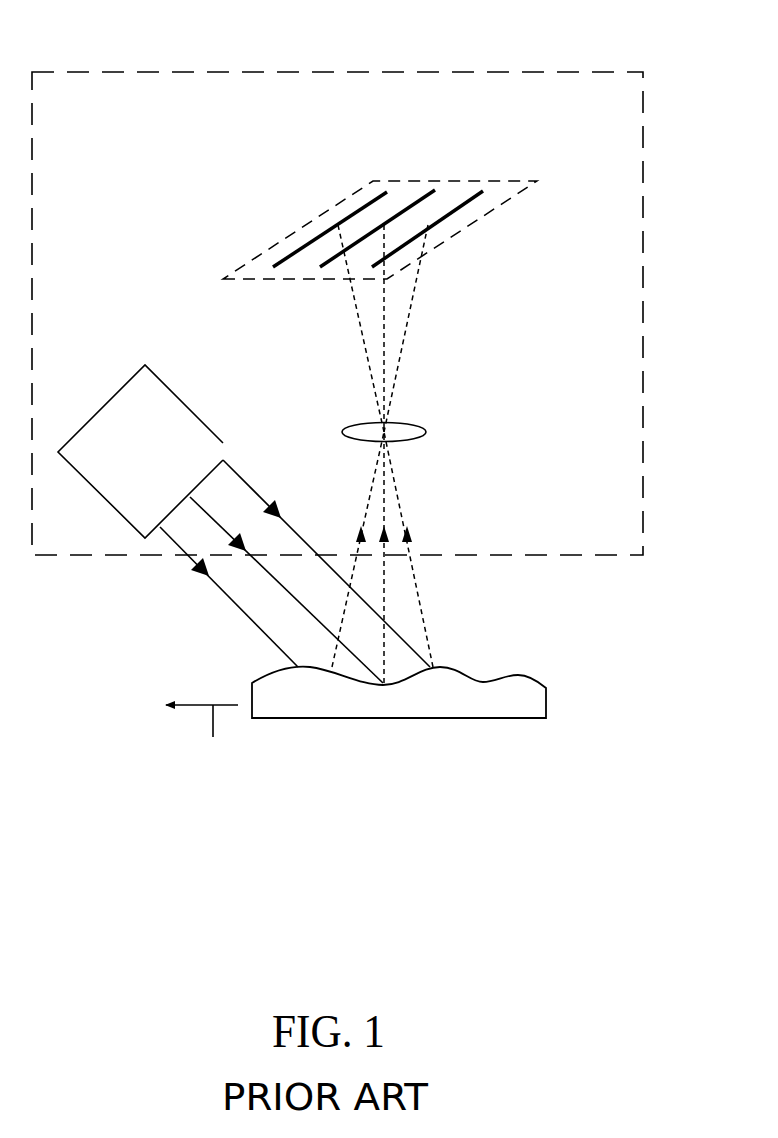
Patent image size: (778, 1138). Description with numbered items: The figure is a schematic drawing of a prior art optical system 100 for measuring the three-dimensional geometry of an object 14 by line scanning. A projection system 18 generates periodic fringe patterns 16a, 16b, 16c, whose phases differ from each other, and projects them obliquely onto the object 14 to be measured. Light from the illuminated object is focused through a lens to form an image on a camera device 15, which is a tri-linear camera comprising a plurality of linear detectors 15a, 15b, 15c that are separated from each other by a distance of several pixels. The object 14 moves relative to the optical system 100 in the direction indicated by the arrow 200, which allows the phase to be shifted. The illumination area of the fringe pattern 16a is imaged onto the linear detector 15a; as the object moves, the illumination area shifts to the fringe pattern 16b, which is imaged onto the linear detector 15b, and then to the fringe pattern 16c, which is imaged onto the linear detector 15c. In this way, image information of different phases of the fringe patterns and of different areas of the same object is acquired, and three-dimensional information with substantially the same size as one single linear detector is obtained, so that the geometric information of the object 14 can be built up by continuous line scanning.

The optical system 100 is at (368, 68).
The camera device 15 is at (435, 181).
The linear detector 15a is at (293, 252).
The linear detector 15b is at (388, 221).
The linear detector 15c is at (460, 205).
The projection system 18 is at (182, 400).
The fringe pattern 16a is at (235, 472).
The fringe pattern 16b is at (223, 528).
The fringe pattern 16c is at (175, 542).
The object 14 is at (525, 703).
The arrow 200 is at (205, 737).